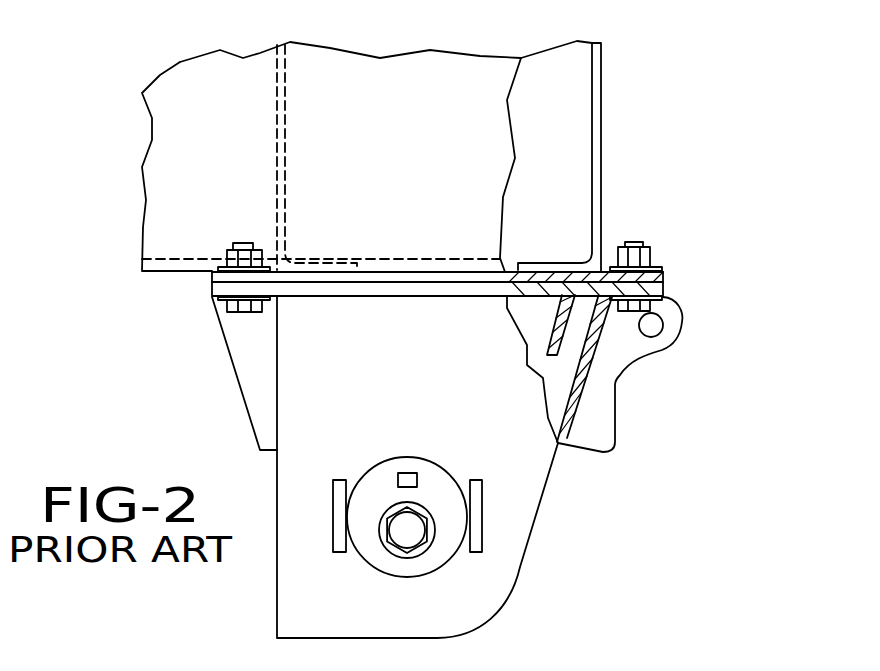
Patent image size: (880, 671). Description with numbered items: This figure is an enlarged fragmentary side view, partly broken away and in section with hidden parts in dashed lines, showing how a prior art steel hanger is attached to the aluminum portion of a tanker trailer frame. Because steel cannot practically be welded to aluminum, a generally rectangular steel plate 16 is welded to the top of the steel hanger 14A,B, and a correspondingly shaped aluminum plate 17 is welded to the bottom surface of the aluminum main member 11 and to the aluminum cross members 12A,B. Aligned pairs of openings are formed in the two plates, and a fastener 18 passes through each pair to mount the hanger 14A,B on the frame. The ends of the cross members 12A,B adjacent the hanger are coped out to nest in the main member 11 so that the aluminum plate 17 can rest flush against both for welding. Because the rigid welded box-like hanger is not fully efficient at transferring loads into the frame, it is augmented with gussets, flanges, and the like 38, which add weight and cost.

The main member 11 is at (180, 62).
The front and rear cross members 12A,B is at (285, 150).
The front and rear hangers 14A,B is at (540, 502).
The steel plate 16 is at (665, 291).
The aluminum plate 17 is at (665, 279).
The fastener 18 is at (650, 248).
The gussets, flanges, and the like 38 is at (258, 377).